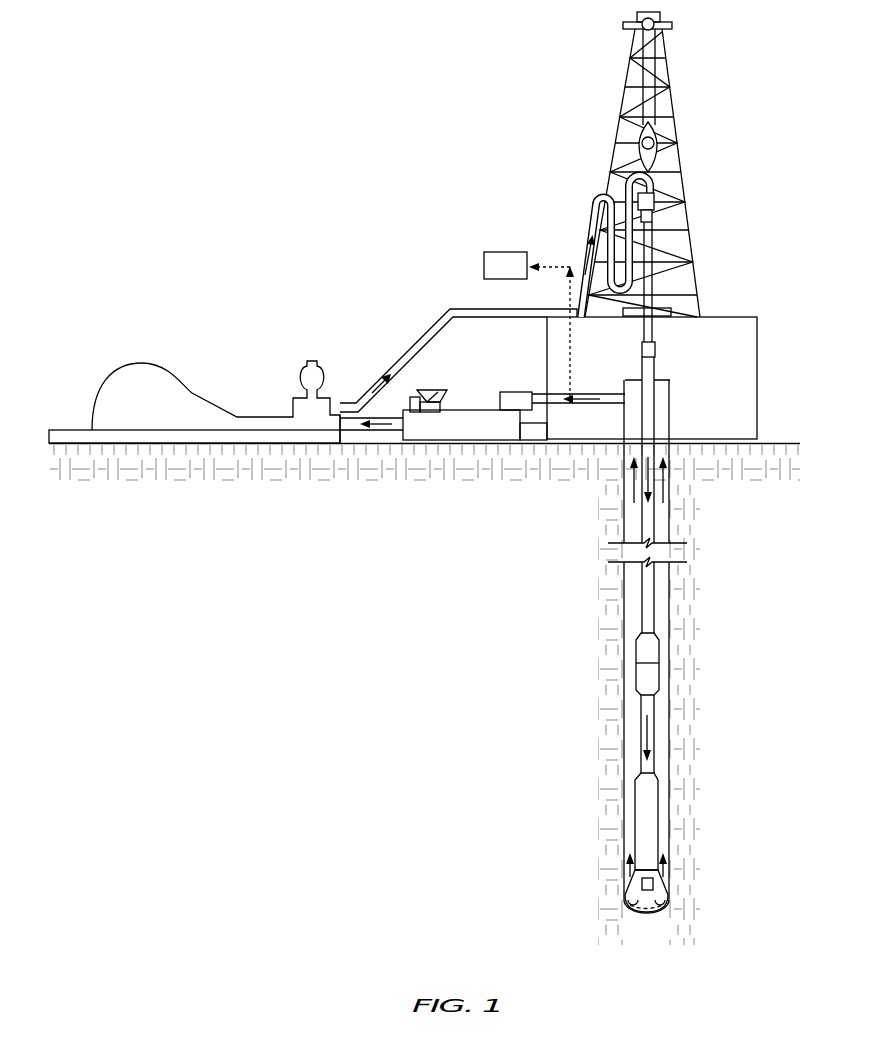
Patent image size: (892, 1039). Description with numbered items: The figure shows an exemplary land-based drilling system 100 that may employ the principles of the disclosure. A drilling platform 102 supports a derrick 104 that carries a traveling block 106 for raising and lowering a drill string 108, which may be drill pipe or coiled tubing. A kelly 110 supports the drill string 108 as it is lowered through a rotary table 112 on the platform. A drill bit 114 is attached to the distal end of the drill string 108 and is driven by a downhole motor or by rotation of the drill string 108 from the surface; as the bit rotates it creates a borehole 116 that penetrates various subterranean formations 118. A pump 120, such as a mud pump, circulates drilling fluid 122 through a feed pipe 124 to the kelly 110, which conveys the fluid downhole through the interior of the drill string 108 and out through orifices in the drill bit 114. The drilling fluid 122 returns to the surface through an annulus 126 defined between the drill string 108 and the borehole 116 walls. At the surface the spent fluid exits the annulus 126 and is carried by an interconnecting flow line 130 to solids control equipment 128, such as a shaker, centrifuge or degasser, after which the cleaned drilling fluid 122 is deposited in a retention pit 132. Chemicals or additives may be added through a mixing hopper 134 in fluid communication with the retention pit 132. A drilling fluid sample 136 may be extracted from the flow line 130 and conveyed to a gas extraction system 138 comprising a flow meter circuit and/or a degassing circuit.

The drilling system 100 is at (330, 115).
The drilling platform 102 is at (757, 366).
The derrick 104 is at (667, 62).
The traveling block 106 is at (672, 117).
The drill string 108 is at (652, 512).
The kelly 110 is at (673, 230).
The rotary table 112 is at (672, 312).
The drill bit 114 is at (657, 888).
The borehole 116 is at (670, 580).
The subterranean formations 118 is at (463, 610).
The pump 120 is at (130, 409).
The drilling fluid 122 is at (352, 402).
The feed pipe 124 is at (452, 307).
The annulus 126 is at (662, 726).
The solids control equipment 128 is at (518, 392).
The flow line 130 is at (608, 404).
The retention pit 132 is at (487, 425).
The mixing hopper 134 is at (418, 412).
The drilling fluid sample 136 is at (560, 266).
The gas extraction system 138 is at (490, 275).